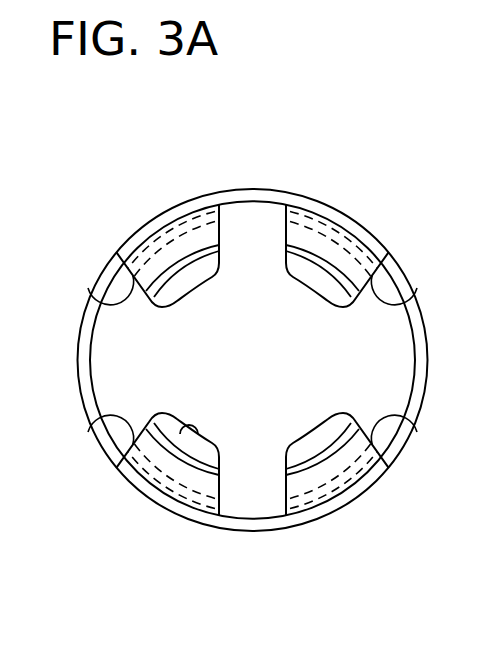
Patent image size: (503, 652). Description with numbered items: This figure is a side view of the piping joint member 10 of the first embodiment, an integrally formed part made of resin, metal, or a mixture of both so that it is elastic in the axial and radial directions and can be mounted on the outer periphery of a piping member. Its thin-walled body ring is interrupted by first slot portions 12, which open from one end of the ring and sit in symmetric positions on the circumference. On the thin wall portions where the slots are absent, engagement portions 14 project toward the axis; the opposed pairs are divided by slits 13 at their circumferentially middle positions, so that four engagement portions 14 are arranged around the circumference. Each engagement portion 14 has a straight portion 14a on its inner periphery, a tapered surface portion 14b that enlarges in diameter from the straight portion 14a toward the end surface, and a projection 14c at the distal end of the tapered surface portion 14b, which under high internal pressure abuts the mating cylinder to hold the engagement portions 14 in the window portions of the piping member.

The piping joint member 10 is at (180, 181).
The first slot portion 12 is at (88, 288).
The slit 13 is at (221, 227).
The engagement portion 14 is at (311, 233).
The straight portion 14a is at (165, 440).
The tapered surface portion 14b is at (320, 447).
The projection 14c is at (206, 472).